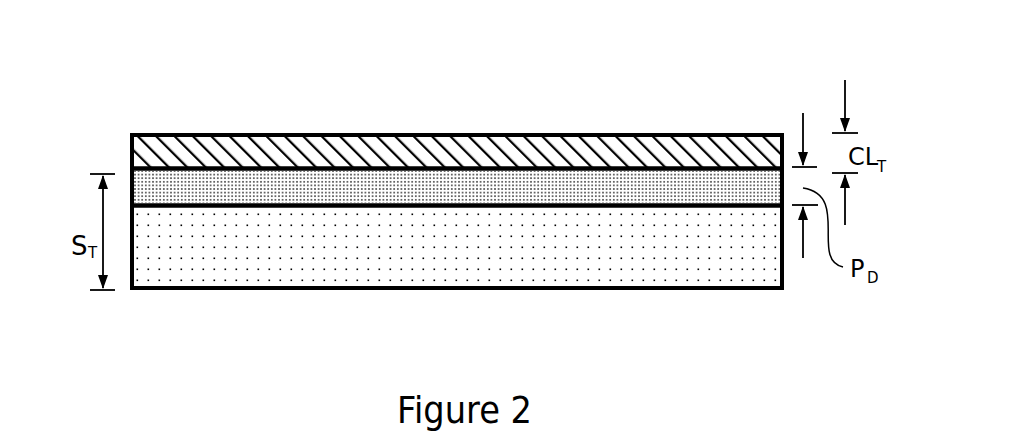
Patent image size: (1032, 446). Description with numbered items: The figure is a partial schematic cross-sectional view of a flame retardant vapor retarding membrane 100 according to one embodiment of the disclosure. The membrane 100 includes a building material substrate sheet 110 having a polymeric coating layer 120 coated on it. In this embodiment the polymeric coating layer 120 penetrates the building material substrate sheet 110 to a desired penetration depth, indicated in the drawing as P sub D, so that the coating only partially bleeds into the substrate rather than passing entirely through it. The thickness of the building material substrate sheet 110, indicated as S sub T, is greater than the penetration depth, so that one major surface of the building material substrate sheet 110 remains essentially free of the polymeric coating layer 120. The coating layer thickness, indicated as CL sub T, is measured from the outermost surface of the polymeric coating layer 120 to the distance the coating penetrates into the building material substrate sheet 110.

The membrane 100 is at (434, 201).
The building material substrate sheet 110 is at (242, 265).
The polymeric coating layer 120 is at (287, 134).